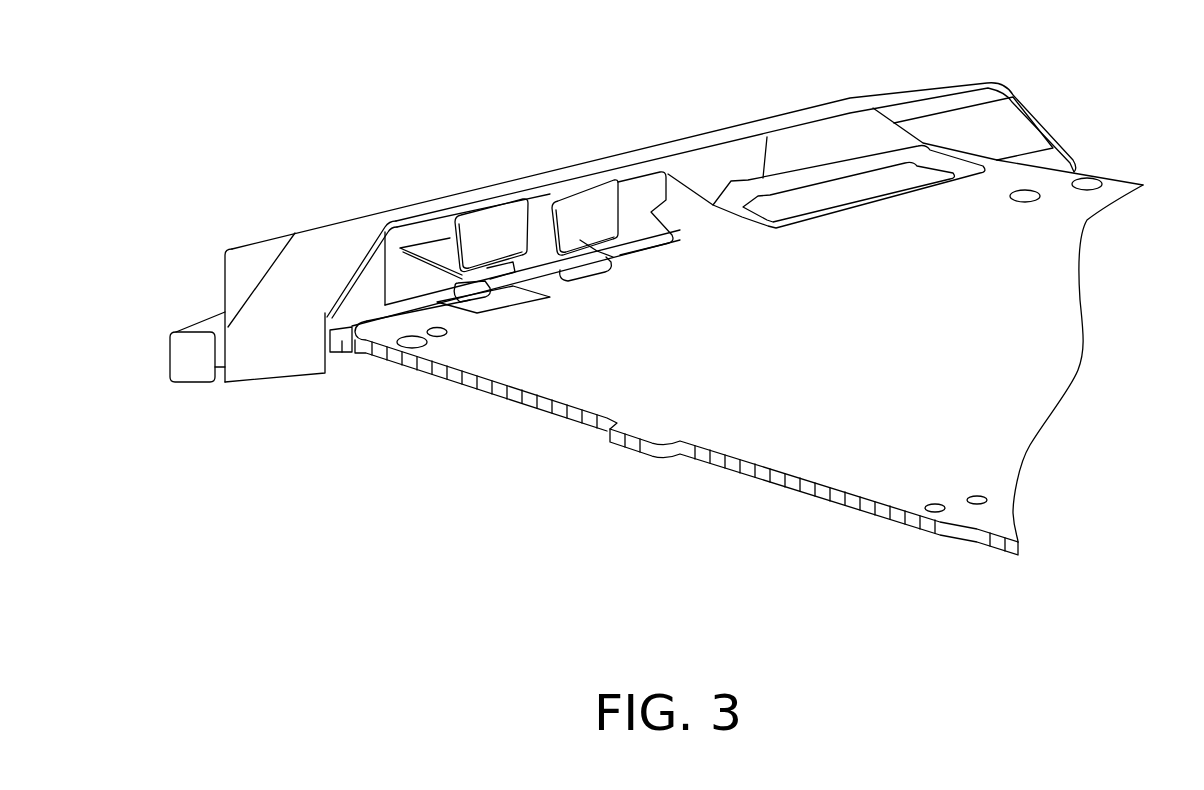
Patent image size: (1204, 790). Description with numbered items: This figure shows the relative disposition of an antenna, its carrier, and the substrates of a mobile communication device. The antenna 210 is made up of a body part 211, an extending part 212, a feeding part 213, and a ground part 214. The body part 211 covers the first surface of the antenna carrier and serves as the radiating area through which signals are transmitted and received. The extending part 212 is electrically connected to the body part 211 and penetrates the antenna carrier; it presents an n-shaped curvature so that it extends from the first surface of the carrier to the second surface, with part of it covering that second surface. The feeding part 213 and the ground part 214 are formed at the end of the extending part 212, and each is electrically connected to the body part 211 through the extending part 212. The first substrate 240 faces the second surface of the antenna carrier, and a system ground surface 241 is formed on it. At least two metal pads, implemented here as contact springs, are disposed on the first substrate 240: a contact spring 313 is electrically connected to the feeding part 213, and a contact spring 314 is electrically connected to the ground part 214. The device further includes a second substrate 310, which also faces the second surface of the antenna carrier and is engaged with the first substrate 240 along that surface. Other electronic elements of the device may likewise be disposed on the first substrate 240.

The antenna 210 is at (575, 96).
The body part 211 is at (353, 256).
The extending part 212 is at (512, 203).
The feeding part 213 is at (447, 250).
The ground part 214 is at (583, 207).
The second substrate 310 is at (343, 343).
The contact spring 313 is at (494, 298).
The contact spring 314 is at (583, 273).
The first substrate 240 is at (885, 512).
The system ground surface 241 is at (763, 438).